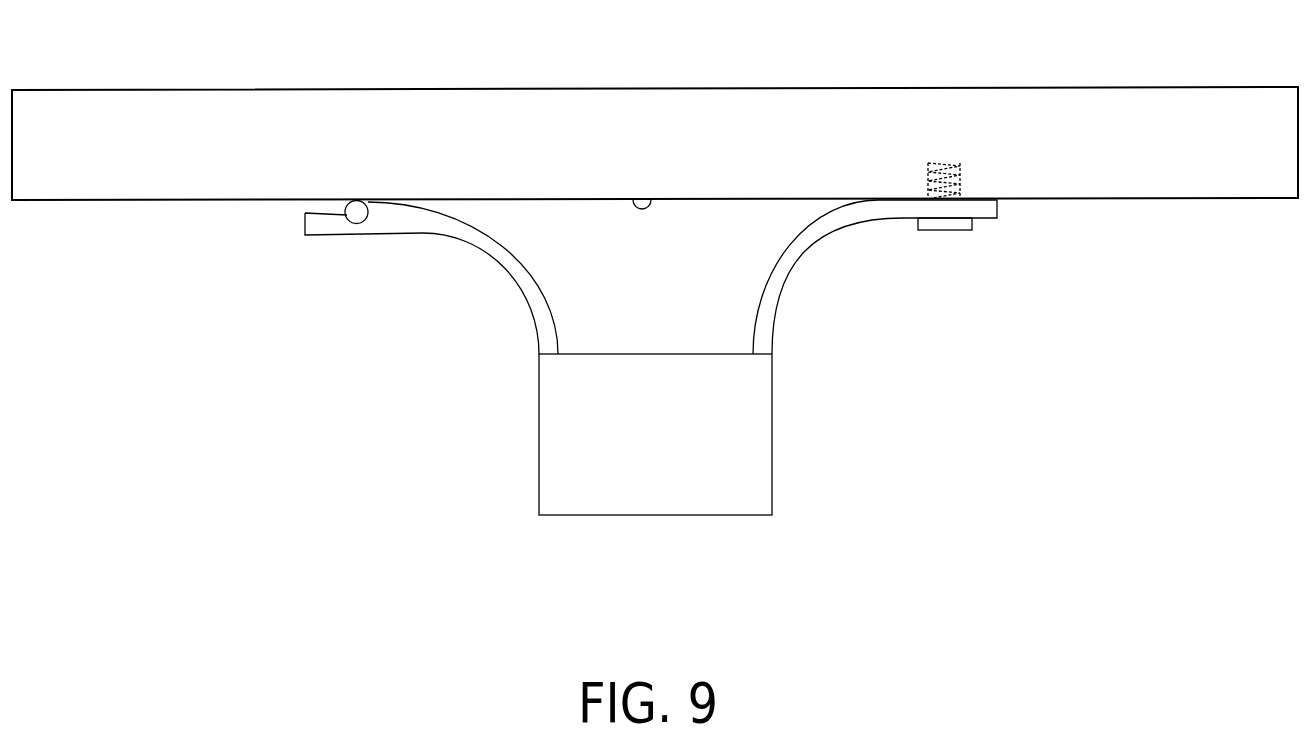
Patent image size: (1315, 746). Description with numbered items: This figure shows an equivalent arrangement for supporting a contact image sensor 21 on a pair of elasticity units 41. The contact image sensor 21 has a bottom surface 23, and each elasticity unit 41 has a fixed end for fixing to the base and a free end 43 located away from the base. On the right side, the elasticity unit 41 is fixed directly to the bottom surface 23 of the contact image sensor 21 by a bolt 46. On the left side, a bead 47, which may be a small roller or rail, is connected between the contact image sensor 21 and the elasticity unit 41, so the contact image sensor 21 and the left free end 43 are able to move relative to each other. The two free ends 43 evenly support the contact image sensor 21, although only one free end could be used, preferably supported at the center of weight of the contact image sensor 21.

The contact image sensor 21 is at (767, 102).
The bottom surface 23 is at (651, 200).
The elasticity unit 41 is at (498, 257).
The free end 43 is at (392, 222).
The bolt 46 is at (937, 230).
The bead 47 is at (352, 213).